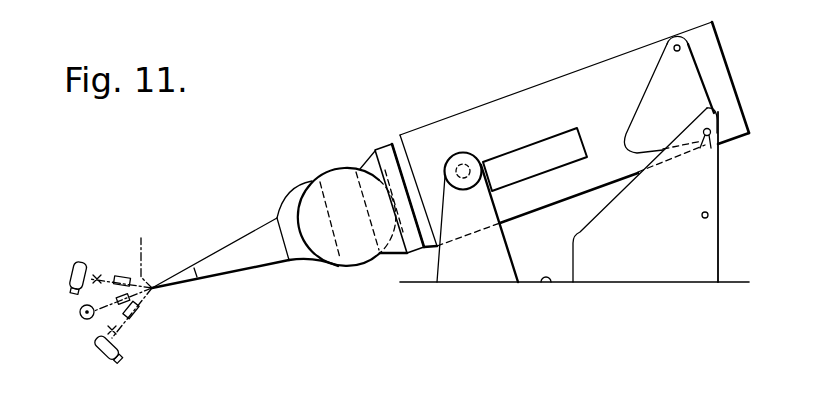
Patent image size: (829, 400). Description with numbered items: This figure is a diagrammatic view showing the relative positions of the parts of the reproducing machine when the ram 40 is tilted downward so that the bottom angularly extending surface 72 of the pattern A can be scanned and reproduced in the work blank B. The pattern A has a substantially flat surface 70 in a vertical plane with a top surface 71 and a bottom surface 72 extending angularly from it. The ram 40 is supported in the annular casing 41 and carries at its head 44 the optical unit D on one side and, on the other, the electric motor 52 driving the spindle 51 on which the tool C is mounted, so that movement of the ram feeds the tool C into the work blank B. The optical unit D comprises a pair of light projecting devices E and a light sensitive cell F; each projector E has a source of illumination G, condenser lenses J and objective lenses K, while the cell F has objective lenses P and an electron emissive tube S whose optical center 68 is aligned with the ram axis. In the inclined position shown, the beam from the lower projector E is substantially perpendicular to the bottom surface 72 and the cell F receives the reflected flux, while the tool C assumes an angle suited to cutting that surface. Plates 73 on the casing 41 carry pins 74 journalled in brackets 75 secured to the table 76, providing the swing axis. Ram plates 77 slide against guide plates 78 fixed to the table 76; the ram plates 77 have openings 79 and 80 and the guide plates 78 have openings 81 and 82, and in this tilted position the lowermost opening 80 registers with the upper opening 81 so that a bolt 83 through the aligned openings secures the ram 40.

The ram 40 is at (380, 150).
The annular casing 41 is at (516, 98).
The head 44 is at (398, 242).
The spindle 51 is at (232, 263).
The electric motor 52 is at (306, 258).
The optical center 68 is at (108, 313).
The flat surface 70 is at (140, 238).
The top angularly extending surface 71 is at (142, 234).
The bottom angularly extending surface 72 is at (158, 294).
The plates 73 is at (549, 160).
The pin 74 is at (475, 158).
The bracket 75 is at (449, 268).
The table 76 is at (549, 285).
The ram plate 77 is at (643, 106).
The guide plate 78 is at (711, 240).
The top opening 79 is at (677, 45).
The lowermost opening 80 is at (719, 120).
The upper opening 81 is at (722, 147).
The lower opening 82 is at (709, 215).
The bolt 83 is at (702, 149).
The pattern A is at (141, 242).
The work blank B is at (146, 238).
The tool C is at (173, 286).
The optical unit D is at (62, 314).
The light projecting device E is at (106, 263).
The light sensitive cell F is at (80, 319).
The source of illumination G is at (72, 268).
The condenser lenses J is at (89, 268).
The objective lenses K is at (122, 274).
The objective lenses P is at (116, 297).
The electron emissive tube S is at (76, 306).